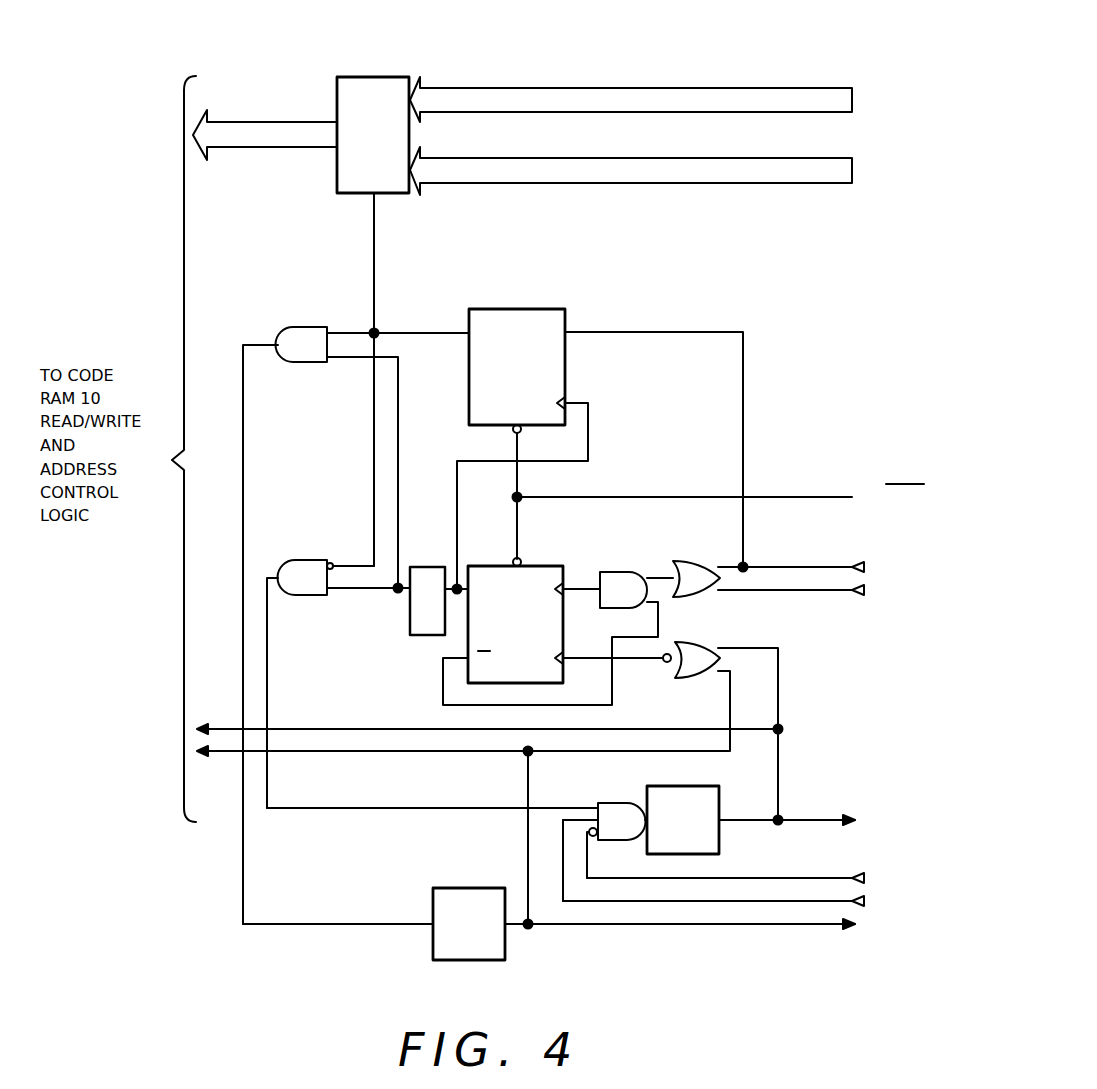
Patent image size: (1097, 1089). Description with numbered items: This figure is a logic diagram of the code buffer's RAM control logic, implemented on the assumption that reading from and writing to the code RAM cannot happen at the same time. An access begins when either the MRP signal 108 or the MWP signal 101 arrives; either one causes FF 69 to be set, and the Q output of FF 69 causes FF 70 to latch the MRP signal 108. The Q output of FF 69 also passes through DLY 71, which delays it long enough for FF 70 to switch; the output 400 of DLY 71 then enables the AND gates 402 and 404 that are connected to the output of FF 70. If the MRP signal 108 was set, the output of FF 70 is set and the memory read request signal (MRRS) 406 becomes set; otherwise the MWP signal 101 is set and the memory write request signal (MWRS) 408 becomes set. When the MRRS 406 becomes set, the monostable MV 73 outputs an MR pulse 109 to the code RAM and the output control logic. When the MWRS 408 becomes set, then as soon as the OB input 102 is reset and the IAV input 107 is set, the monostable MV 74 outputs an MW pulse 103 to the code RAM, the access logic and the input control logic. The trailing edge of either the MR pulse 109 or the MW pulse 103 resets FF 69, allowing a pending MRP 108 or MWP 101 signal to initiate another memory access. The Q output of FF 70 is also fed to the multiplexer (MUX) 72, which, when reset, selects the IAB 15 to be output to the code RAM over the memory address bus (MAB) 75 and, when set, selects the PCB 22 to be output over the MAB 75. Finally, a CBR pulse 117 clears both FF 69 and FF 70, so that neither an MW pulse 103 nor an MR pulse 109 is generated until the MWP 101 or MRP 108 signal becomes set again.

The multiplexer (MUX) 72 is at (378, 76).
The memory address bus (MAB) 75 is at (265, 122).
The IAB 15 is at (515, 88).
The PCB 22 is at (517, 158).
The AND gate 404 is at (306, 327).
The FF 70 is at (514, 309).
The CBR pulse 117 is at (777, 497).
The AND gate 402 is at (300, 560).
The output of DLY 400 is at (358, 592).
The DLY 71 is at (408, 628).
The FF 69 is at (540, 566).
The MRP signal 108 is at (800, 567).
The MWP signal 101 is at (798, 593).
The memory write request signal (MWRS) 408 is at (395, 808).
The MV 74 is at (705, 786).
The MW pulse 103 is at (806, 820).
The OB input 102 is at (740, 878).
The IAV input 107 is at (725, 901).
The MR pulse 109 is at (705, 924).
The MV 73 is at (455, 888).
The memory read request signal (MRRS) 406 is at (360, 924).